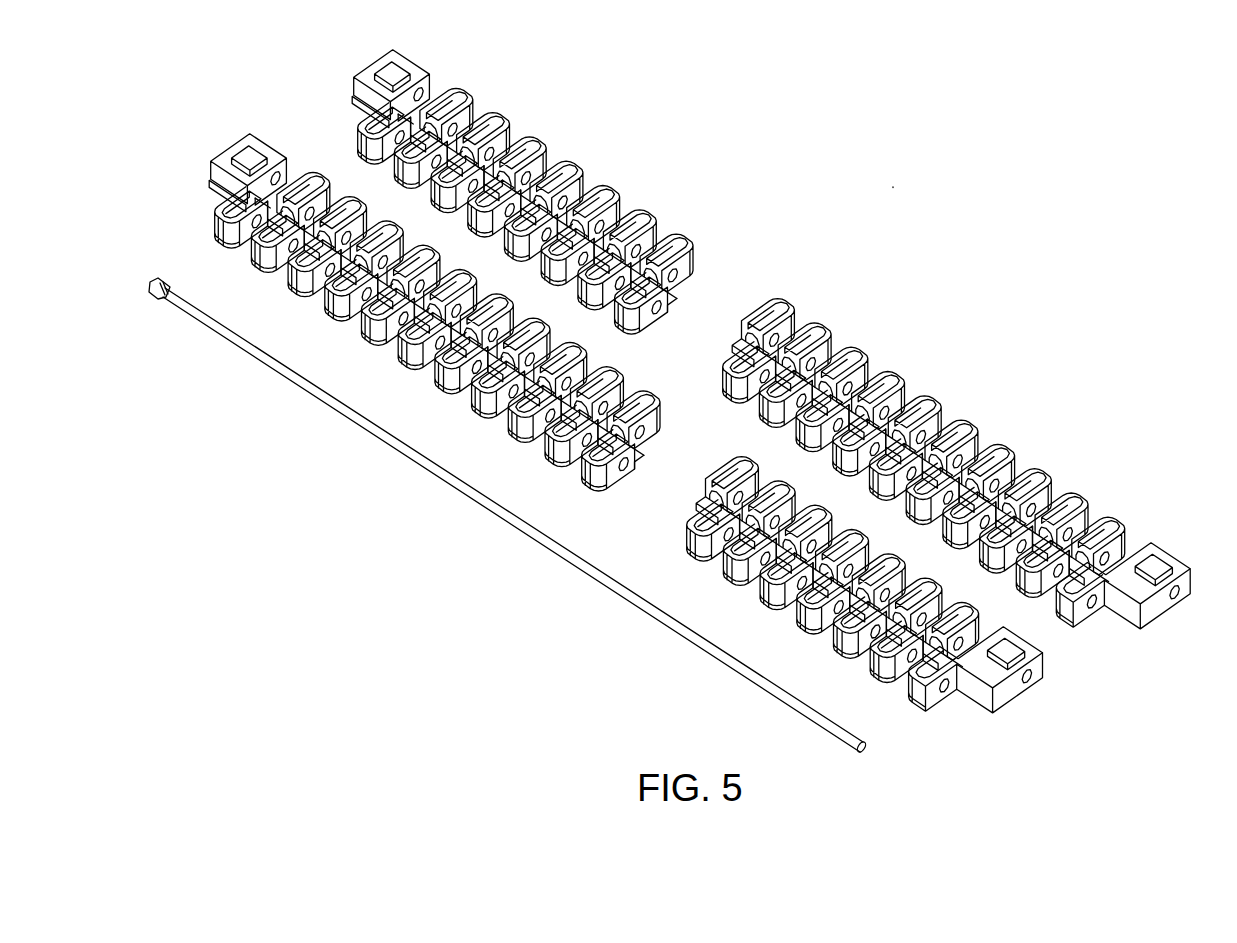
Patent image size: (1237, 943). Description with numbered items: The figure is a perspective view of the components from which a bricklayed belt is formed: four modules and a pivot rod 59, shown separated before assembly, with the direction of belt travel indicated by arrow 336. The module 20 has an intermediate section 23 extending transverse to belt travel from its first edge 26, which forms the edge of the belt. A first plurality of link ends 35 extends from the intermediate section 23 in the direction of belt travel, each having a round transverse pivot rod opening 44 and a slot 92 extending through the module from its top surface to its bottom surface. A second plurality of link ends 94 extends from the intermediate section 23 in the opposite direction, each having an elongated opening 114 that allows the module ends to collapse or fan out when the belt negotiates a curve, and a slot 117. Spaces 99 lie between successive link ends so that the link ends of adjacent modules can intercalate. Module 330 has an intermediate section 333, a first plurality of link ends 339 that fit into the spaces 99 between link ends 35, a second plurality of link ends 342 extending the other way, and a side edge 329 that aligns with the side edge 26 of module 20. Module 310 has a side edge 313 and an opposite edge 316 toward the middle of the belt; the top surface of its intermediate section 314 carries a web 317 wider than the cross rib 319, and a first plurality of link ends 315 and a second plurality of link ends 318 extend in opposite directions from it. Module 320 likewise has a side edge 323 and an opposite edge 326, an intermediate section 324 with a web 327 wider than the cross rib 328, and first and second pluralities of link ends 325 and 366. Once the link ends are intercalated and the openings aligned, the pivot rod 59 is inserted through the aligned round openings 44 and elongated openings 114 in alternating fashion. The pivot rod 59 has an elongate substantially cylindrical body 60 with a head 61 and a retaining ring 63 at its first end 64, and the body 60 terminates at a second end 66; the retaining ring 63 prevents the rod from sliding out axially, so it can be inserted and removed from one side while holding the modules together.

The module 20 is at (987, 386).
The intermediate section 23 is at (1045, 487).
The first edge 26 is at (1163, 595).
The first plurality of link ends 35 is at (1020, 437).
The transverse pivot rod opening 44 is at (847, 341).
The pivot rod 59 is at (379, 487).
The cylindrical body 60 is at (470, 485).
The head 61 is at (150, 290).
The retaining ring 63 is at (162, 302).
The first end 64 is at (148, 238).
The second end 66 is at (872, 748).
The slot 92 is at (883, 383).
The second plurality of link ends 94 is at (765, 400).
The spaces 99 is at (1004, 575).
The elongated opening 114 is at (897, 495).
The slot 117 is at (985, 548).
The module 310 is at (623, 146).
The side edge 313 is at (375, 62).
The intermediate section 314 is at (558, 150).
The first plurality of link ends 315 is at (456, 100).
The opposite edge 316 is at (358, 140).
The web 317 is at (693, 247).
The second plurality of link ends 318 is at (393, 175).
The cross rib 319 is at (670, 288).
The module 320 is at (281, 116).
The side edge 323 is at (222, 150).
The intermediate section 324 is at (367, 327).
The first plurality of link ends 325 is at (400, 234).
The opposite edge 326 is at (637, 454).
The web 327 is at (650, 395).
The cross rib 328 is at (645, 462).
The side edge 329 is at (1016, 690).
The module 330 is at (1065, 723).
The intermediate section 333 is at (870, 563).
The arrow 336 is at (904, 188).
The first plurality of link ends 339 is at (750, 458).
The second plurality of link ends 342 is at (690, 547).
The second plurality of link ends 366 is at (283, 285).